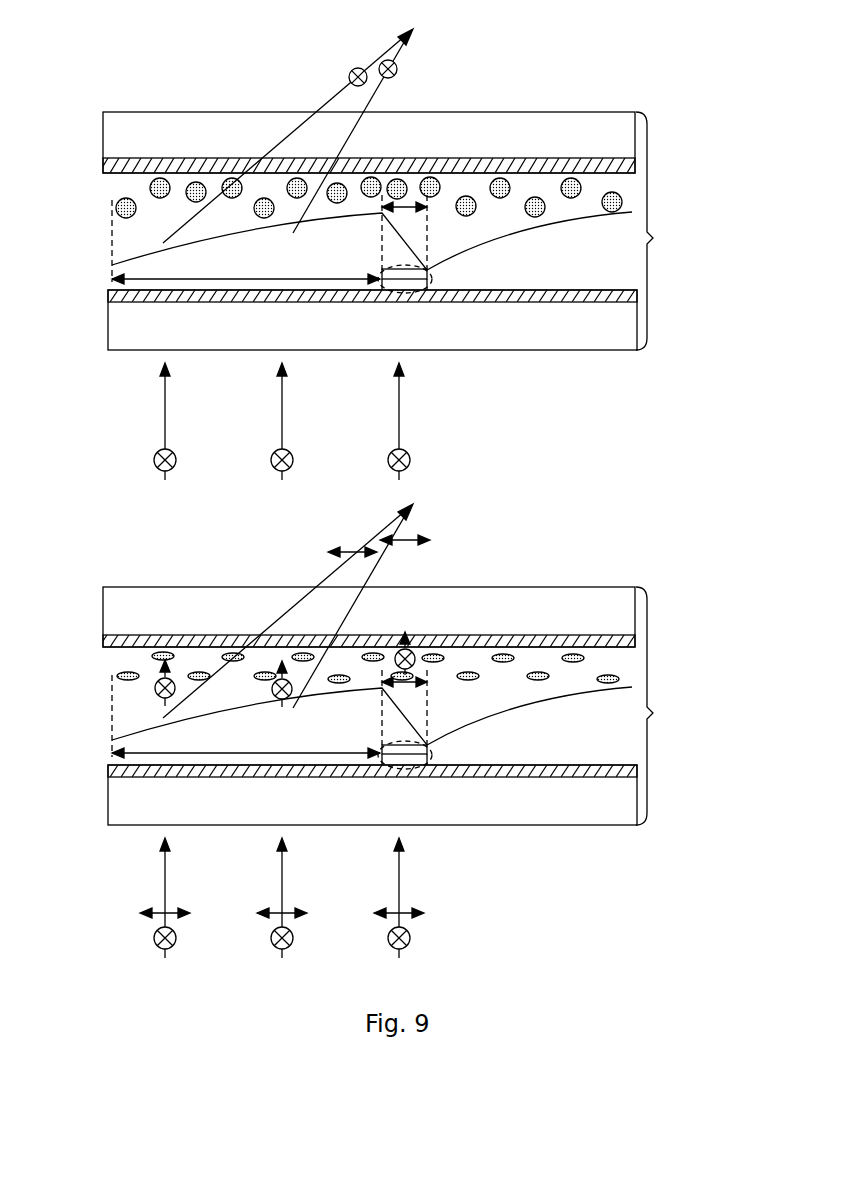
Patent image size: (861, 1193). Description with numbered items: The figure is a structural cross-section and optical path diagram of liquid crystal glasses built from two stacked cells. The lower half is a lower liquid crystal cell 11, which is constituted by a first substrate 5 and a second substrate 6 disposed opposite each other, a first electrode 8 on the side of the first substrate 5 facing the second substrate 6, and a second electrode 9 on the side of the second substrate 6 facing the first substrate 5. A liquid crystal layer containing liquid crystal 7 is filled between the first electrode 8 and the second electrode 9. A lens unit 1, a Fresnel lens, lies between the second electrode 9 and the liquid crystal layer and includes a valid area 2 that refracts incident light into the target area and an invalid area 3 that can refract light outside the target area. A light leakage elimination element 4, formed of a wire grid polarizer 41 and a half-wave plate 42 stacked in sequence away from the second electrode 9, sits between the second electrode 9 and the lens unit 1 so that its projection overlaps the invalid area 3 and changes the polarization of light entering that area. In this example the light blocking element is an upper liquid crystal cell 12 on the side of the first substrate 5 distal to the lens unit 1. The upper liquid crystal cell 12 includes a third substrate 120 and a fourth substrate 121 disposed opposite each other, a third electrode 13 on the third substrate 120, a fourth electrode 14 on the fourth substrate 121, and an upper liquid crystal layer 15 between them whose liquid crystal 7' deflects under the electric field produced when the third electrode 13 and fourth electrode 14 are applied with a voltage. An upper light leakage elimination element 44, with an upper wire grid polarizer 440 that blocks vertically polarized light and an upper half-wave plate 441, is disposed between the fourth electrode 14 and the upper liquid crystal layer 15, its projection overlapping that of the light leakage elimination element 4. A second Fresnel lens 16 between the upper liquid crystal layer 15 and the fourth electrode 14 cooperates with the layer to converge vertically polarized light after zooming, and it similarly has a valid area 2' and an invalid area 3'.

The third substrate 120 is at (130, 130).
The third electrode 13 is at (107, 165).
The upper liquid crystal layer 15 is at (128, 238).
The liquid crystal of the upper liquid crystal layer 7' is at (403, 183).
The second Fresnel lens 16 is at (632, 212).
The upper liquid crystal cell 12 is at (656, 231).
The valid area 2' is at (246, 270).
The invalid area 3' is at (404, 232).
The upper light leakage elimination element 44 is at (380, 288).
The upper wire grid polarizer 440 is at (400, 284).
The upper half-wave plate 441 is at (418, 276).
The fourth electrode 14 is at (494, 297).
The fourth substrate 121 is at (582, 340).
The first substrate 5 is at (130, 605).
The first electrode 8 is at (107, 643).
The liquid crystal molecules 7 is at (399, 651).
The lens unit 1 is at (632, 688).
The lower liquid crystal cell 11 is at (656, 706).
The valid area 2 is at (246, 744).
The invalid area 3 is at (404, 707).
The light leakage elimination element 4 is at (378, 763).
The wire grid polarizer 41 is at (398, 757).
The half-wave plate 42 is at (413, 750).
The second electrode 9 is at (500, 773).
The second substrate 6 is at (582, 812).